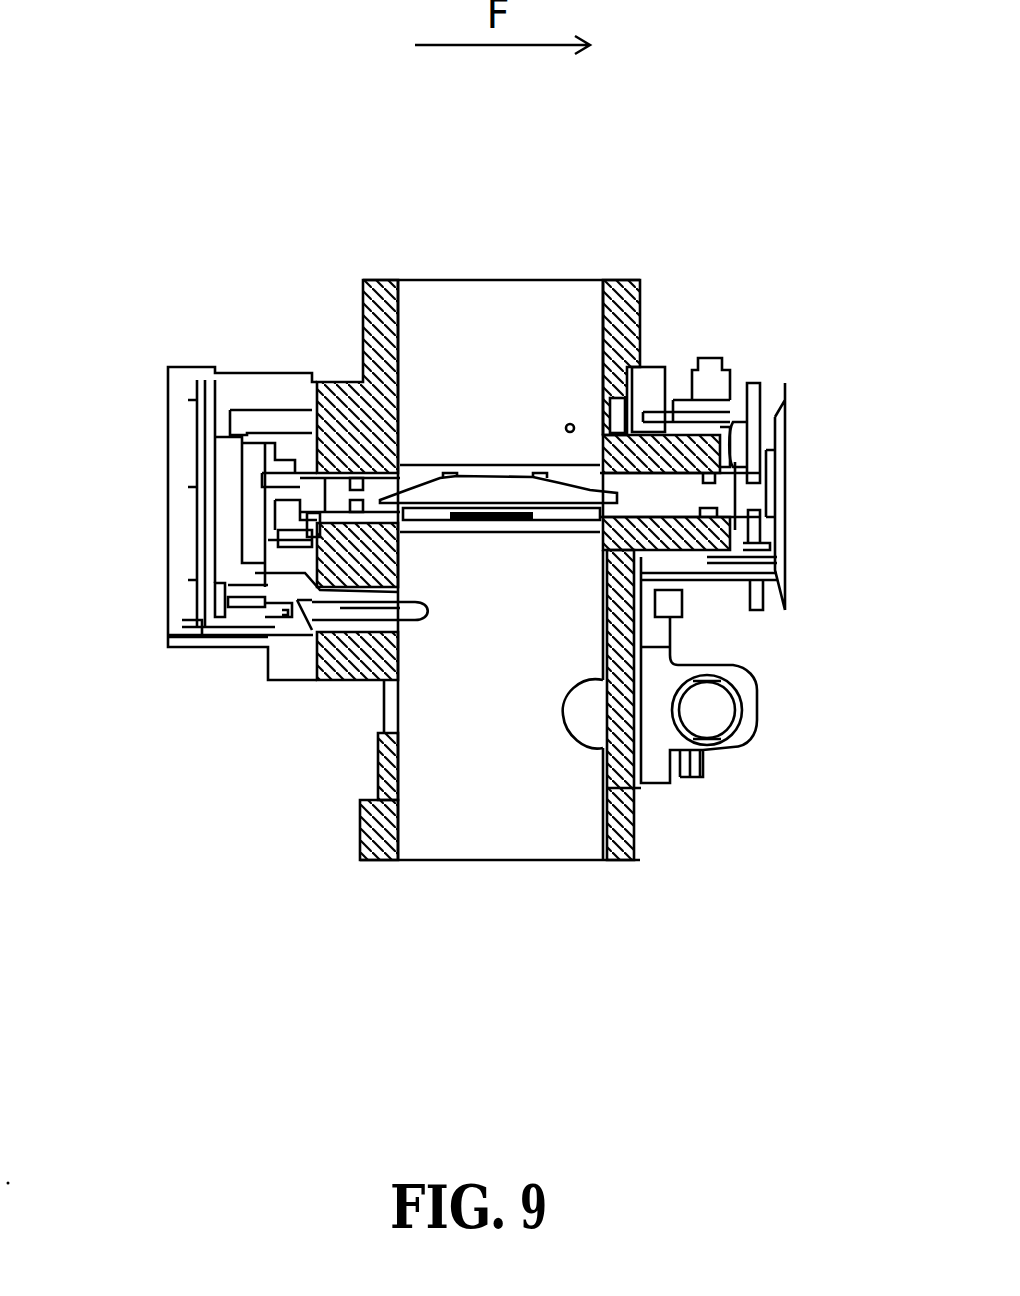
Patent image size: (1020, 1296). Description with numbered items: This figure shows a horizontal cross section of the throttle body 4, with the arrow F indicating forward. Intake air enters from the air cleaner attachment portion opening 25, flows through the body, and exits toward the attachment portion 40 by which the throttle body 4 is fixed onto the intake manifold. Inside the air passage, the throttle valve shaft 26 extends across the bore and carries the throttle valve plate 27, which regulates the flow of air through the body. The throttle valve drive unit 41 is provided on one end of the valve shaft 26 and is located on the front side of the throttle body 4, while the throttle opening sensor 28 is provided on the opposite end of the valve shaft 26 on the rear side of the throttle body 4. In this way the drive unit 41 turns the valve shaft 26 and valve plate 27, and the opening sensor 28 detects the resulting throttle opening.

The throttle body 4 is at (205, 246).
The air cleaner attachment portion opening 25 is at (546, 862).
The throttle valve shaft 26 is at (650, 500).
The throttle valve plate 27 is at (487, 480).
The throttle opening sensor 28 is at (136, 492).
The attachment portion 40 is at (637, 312).
The throttle valve drive unit 41 is at (815, 470).